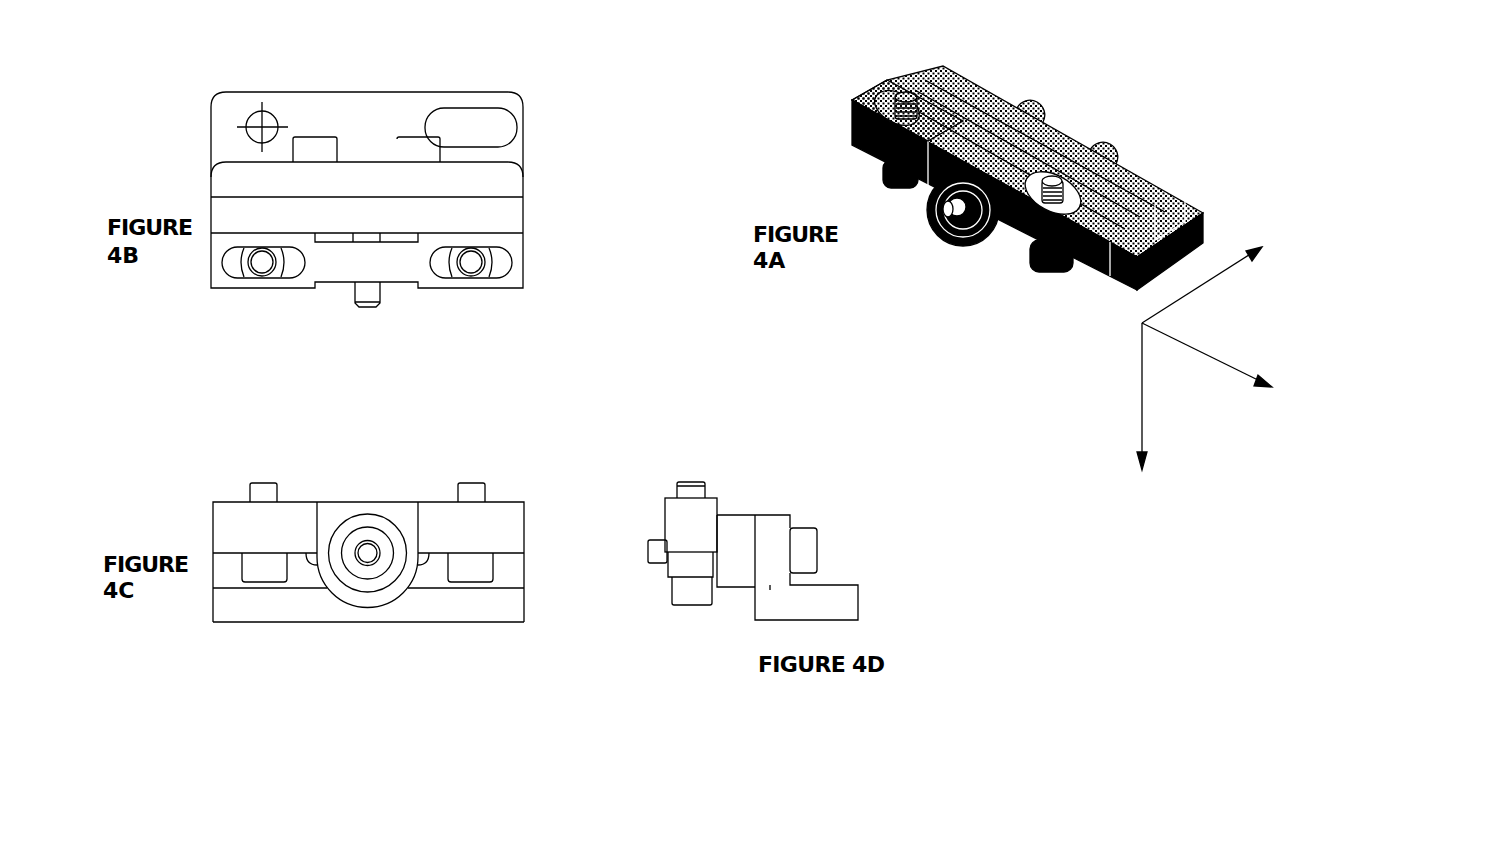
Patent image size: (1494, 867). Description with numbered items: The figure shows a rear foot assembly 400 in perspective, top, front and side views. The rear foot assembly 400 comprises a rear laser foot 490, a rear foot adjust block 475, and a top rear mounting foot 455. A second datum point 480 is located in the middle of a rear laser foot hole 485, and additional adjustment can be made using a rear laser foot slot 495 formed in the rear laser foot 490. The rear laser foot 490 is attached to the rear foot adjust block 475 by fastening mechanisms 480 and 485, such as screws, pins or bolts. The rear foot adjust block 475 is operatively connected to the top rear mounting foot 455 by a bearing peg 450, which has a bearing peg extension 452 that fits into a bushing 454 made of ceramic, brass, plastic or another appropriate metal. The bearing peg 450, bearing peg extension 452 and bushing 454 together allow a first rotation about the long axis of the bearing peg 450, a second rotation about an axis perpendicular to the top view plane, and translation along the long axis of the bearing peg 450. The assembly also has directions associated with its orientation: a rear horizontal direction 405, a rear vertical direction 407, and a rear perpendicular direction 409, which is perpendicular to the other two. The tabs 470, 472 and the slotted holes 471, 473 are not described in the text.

In FIG. 4A, the rear foot assembly 400 is at (971, 188).
In FIG. 4A, the rear horizontal direction 405 is at (1302, 277).
In FIG. 4A, the rear vertical direction 407 is at (1185, 456).
In FIG. 4A, the rear perpendicular direction 409 is at (1305, 401).
In FIG. 4B, the bearing peg 450 is at (355, 303).
In FIG. 4C, the bearing peg 450 is at (365, 547).
In FIG. 4D, the bearing peg 450 is at (648, 555).
In FIG. 4A, the bearing peg 450 is at (945, 227).
In FIG. 4C, the bearing peg extension 452 is at (364, 546).
In FIG. 4C, the bushing 454 is at (370, 540).
In FIG. 4B, the top rear mounting foot 455 is at (522, 260).
In FIG. 4D, the top rear mounting foot 455 is at (667, 500).
In FIG. 4A, the top rear mounting foot 455 is at (852, 127).
In FIG. 4C, the right tab 470 is at (473, 581).
In FIG. 4A, the right tab 470 is at (1055, 272).
In FIG. 4B, the left slot 471 is at (227, 270).
In FIG. 4C, the left tab 472 is at (263, 582).
In FIG. 4A, the left tab 472 is at (900, 188).
In FIG. 4B, the right slot 473 is at (437, 277).
In FIG. 4B, the rear foot adjust block 475 is at (210, 208).
In FIG. 4C, the rear foot adjust block 475 is at (525, 567).
In FIG. 4D, the rear foot adjust block 475 is at (737, 515).
In FIG. 4B, the second datum point 480 is at (257, 121).
In FIG. 4B, the rear laser foot hole 485 is at (272, 108).
In FIG. 4C, the rear laser foot 490 is at (524, 622).
In FIG. 4D, the rear laser foot 490 is at (860, 600).
In FIG. 4B, the rear laser foot slot 495 is at (513, 110).